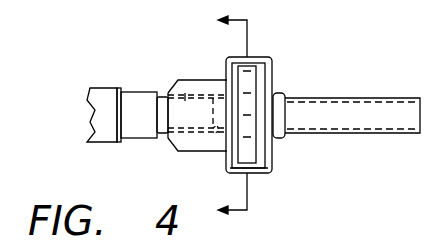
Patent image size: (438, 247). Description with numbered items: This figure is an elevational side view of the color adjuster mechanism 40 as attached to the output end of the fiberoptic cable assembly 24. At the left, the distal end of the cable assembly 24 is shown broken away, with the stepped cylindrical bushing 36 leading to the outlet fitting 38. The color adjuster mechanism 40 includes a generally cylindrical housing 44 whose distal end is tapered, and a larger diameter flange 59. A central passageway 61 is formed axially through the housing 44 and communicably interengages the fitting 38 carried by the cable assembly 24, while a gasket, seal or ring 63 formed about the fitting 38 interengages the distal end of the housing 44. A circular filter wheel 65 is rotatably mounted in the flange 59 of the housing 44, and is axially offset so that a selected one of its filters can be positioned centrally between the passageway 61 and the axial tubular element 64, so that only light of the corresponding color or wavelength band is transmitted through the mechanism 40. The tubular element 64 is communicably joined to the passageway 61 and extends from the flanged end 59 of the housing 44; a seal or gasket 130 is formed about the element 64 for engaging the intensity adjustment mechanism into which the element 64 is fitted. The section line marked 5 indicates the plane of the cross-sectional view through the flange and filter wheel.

The bushing 36 is at (107, 87).
The fiberoptic cable assembly 24 is at (137, 139).
The gasket, seal or ring 63 is at (163, 96).
The outlet fitting 38 is at (185, 96).
The housing 44 is at (207, 79).
The central passageway 61 is at (211, 136).
The color adjuster mechanism 40 is at (272, 58).
The filter wheel 65 is at (253, 147).
The flange 59 is at (268, 172).
The seal or gasket 130 is at (278, 95).
The axial tubular element 64 is at (377, 97).
The section line 5- 5 is at (245, 113).